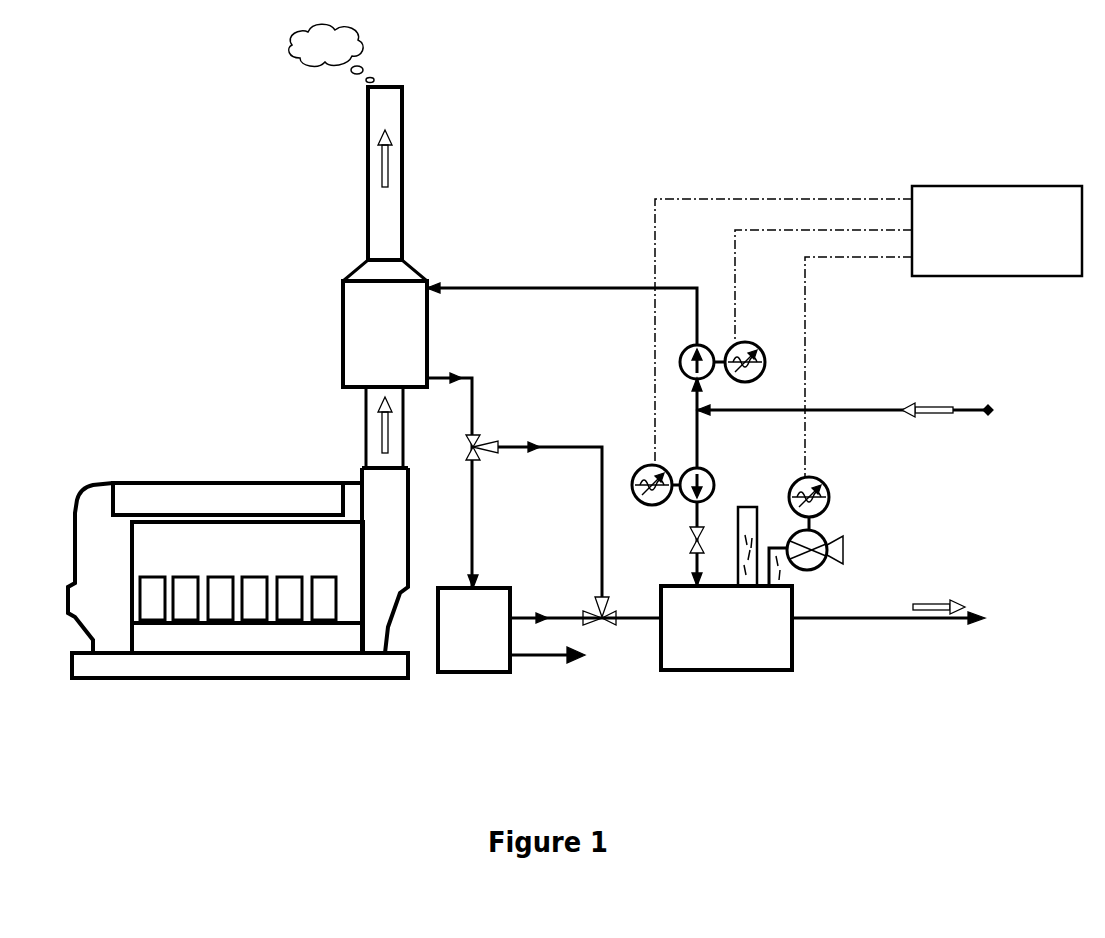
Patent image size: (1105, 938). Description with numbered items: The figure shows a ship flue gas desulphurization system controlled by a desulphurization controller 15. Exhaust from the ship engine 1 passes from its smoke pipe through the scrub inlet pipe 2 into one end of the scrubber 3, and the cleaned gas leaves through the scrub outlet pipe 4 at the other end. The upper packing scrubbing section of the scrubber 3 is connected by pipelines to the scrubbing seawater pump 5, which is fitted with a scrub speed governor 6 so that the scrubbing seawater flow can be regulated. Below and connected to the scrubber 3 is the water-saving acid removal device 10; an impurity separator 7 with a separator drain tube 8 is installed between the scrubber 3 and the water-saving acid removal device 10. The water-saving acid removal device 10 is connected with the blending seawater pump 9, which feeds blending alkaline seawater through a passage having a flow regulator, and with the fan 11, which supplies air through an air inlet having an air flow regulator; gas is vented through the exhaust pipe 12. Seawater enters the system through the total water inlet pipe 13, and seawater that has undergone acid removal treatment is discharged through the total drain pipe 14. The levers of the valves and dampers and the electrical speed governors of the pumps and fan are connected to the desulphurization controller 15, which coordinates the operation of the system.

The ship engine 1 is at (220, 497).
The scrub inlet pipe 2 is at (368, 455).
The scrubber 3 is at (355, 300).
The scrub outlet pipe 4 is at (395, 153).
The scrubbing seawater pump 5 is at (706, 347).
The scrub speed governor 6 is at (762, 347).
The separator 7 is at (487, 603).
The separator drain tube 8 is at (583, 655).
The blending seawater pump 9 is at (687, 472).
The water-saving deacidification device 10 is at (703, 655).
The fan 11 is at (813, 538).
The exhaust pipe 12 is at (748, 507).
The total water inlet pipe 13 is at (900, 410).
The total drain pipe 14 is at (883, 618).
The desulphurization controller 15 is at (988, 270).